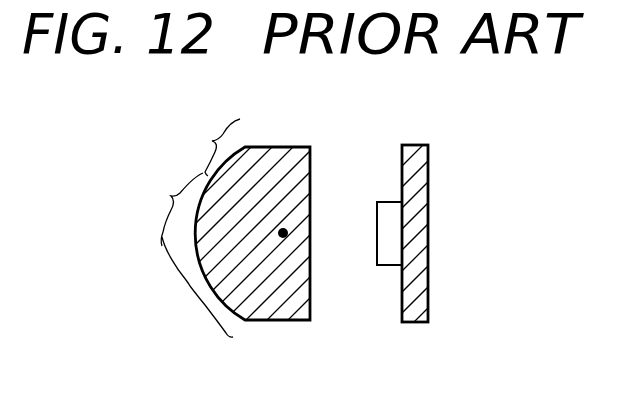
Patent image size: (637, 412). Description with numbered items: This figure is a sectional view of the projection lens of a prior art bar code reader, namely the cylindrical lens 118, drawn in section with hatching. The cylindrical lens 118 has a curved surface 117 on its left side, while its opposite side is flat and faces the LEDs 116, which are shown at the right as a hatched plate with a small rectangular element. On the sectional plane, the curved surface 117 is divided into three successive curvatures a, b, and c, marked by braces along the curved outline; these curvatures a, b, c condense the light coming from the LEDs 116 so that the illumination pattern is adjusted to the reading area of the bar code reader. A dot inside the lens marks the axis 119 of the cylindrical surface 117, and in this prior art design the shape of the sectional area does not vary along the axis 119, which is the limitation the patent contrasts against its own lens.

The LEDs 116 is at (388, 208).
The curved surface 117 is at (220, 301).
The cylindrical lens 118 is at (286, 158).
The axis 119 is at (283, 238).
The curvature a is at (178, 298).
The curvature b is at (164, 188).
The curvature c is at (204, 133).